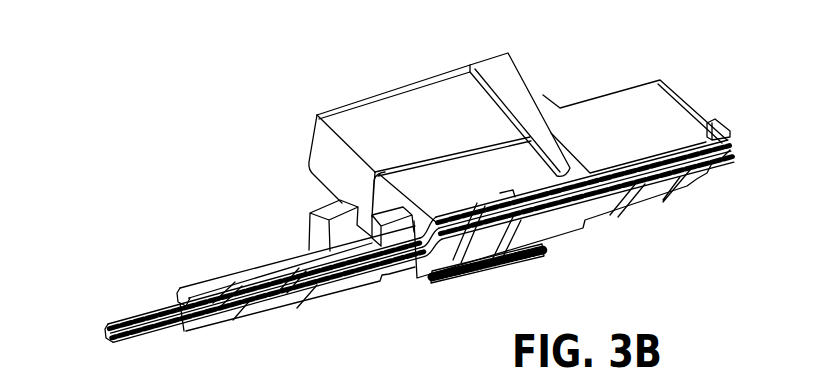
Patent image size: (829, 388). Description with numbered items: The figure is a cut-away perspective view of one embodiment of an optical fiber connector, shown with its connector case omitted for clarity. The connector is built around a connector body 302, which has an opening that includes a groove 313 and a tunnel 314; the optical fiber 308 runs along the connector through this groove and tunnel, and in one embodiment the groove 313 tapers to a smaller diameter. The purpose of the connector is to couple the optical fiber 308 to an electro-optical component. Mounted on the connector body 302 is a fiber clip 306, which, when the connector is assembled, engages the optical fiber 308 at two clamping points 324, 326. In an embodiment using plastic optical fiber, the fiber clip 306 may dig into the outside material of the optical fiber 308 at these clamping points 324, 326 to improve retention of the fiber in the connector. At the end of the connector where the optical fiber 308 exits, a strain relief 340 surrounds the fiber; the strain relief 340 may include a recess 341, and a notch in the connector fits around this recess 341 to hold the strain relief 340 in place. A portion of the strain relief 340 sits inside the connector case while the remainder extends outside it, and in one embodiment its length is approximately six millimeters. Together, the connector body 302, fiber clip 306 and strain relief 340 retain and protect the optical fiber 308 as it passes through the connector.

The connector body 302 is at (386, 103).
The fiber clip 306 is at (513, 156).
The optical fiber 308 is at (124, 312).
The groove 313 is at (545, 240).
The tunnel 314 is at (674, 177).
The clamping point 324 is at (488, 222).
The clamping point 326 is at (429, 236).
The strain relief 340 is at (265, 266).
The recess 341 is at (384, 283).